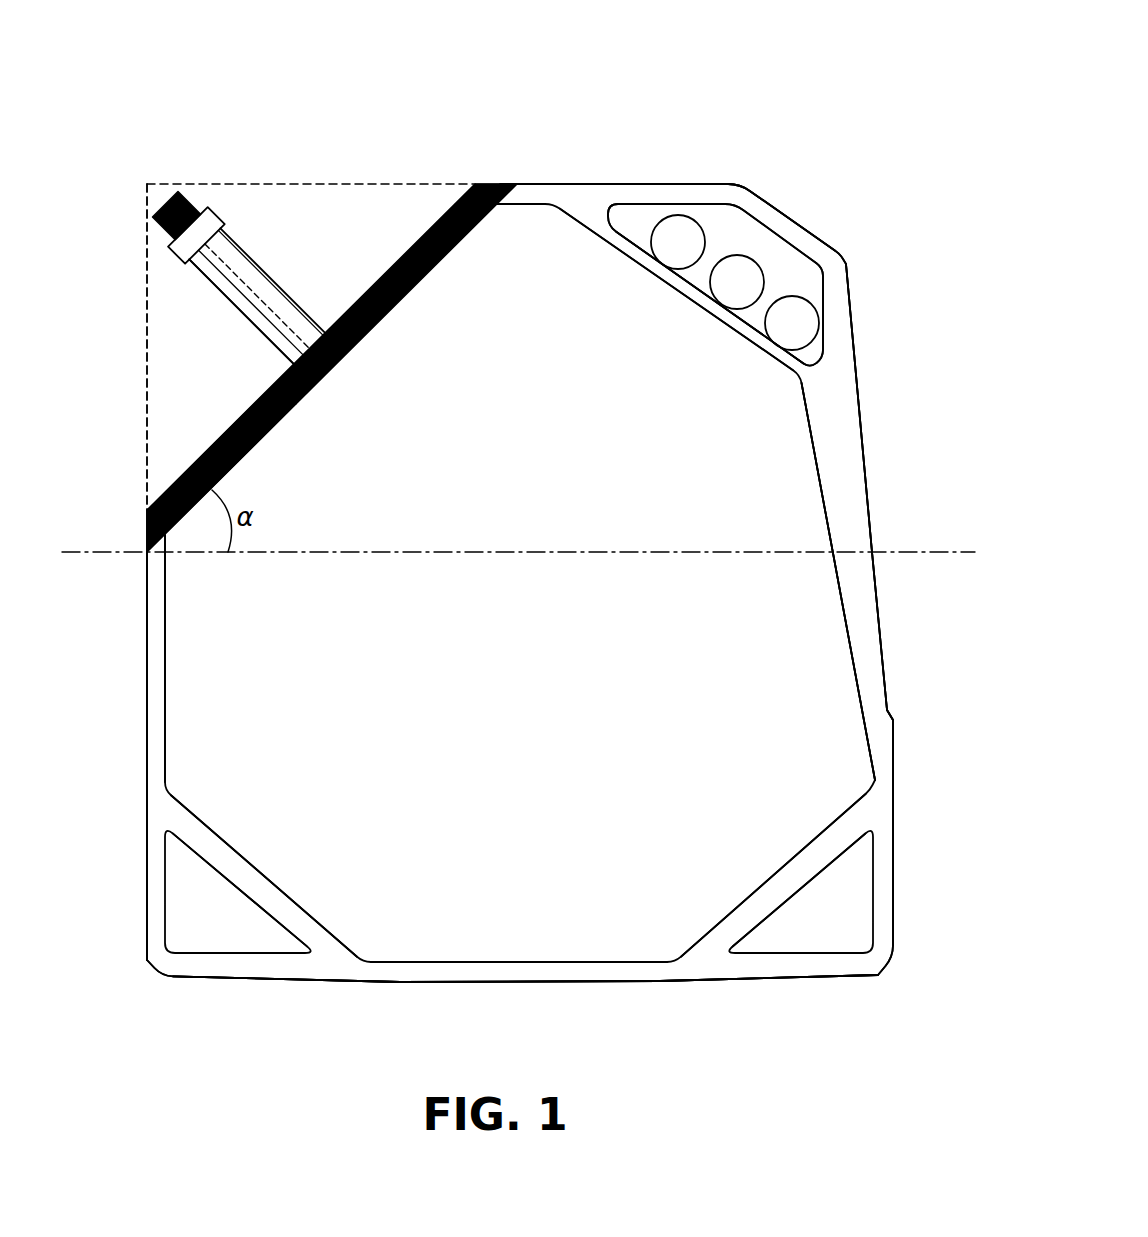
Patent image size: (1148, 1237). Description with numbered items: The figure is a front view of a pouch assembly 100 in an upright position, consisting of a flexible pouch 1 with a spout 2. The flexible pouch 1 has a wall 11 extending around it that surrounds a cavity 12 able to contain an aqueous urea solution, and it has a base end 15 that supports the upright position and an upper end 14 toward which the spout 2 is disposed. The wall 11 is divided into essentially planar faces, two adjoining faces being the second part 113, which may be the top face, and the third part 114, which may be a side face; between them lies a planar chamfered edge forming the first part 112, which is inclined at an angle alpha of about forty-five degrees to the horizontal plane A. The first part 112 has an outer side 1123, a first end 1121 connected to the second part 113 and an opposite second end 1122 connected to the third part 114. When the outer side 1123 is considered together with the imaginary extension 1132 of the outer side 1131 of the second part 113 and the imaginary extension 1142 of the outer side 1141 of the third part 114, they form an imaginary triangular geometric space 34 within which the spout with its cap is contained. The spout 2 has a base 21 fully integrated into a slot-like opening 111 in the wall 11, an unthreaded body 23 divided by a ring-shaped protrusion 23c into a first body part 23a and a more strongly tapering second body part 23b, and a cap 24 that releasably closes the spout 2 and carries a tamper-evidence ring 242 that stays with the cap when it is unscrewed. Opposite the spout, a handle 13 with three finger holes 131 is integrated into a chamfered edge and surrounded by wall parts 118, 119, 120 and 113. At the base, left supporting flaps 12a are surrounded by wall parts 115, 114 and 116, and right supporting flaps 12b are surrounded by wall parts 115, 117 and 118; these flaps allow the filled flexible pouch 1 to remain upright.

The pouch assembly 100 is at (708, 118).
The flexible pouch 1 is at (185, 715).
The wall 11 is at (845, 492).
The cavity 12 is at (520, 583).
The left supporting flaps 12a is at (243, 895).
The right supporting flaps 12b is at (780, 910).
The handle 13 is at (760, 252).
The upper end 14 is at (518, 183).
The base end 15 is at (515, 988).
The opening 111 is at (292, 403).
The first part 112 is at (400, 293).
The second part 113 is at (537, 192).
The third part 114 is at (158, 660).
The wall part 115 is at (478, 972).
The wall part 116 is at (293, 907).
The wall part 117 is at (823, 840).
The wall part 118 is at (845, 527).
The wall part 119 is at (640, 252).
The wall part 120 is at (753, 200).
The holes 131 is at (783, 330).
The first end 1121 is at (476, 183).
The second end 1122 is at (145, 508).
The outer side 1123 is at (367, 297).
The outer side 1131 is at (655, 183).
The imaginary extension 1132 is at (305, 182).
The outer side 1141 is at (148, 790).
The imaginary extension 1142 is at (147, 352).
The spout 2 is at (255, 266).
The base 21 is at (345, 345).
The body 23 is at (259, 307).
The first body part 23a is at (225, 273).
The second body part 23b is at (273, 315).
The ring-shaped protrusion 23c is at (245, 298).
The cap 24 is at (203, 222).
The tamper-evidence ring 242 is at (217, 228).
The geometric space 34 is at (163, 277).
The horizontal plane A is at (518, 539).